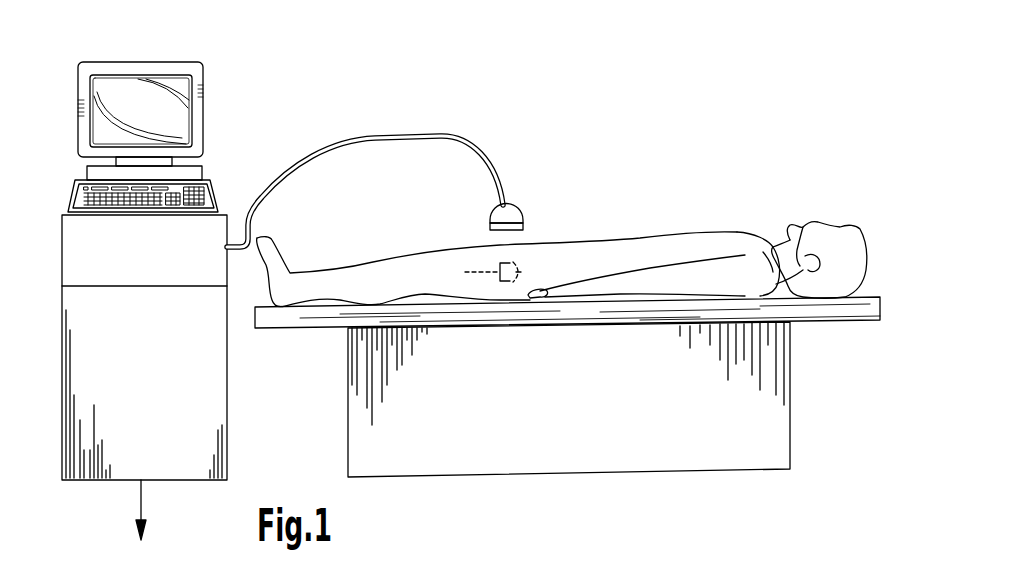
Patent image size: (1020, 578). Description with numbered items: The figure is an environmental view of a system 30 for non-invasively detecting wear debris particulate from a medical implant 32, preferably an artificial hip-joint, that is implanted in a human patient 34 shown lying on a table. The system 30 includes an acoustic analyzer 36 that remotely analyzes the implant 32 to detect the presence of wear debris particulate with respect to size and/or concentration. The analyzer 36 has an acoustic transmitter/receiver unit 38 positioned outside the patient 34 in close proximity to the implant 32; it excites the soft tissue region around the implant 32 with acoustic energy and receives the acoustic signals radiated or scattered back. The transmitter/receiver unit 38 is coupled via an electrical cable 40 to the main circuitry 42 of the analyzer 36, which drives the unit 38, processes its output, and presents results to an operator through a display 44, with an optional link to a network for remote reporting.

The system 30 is at (281, 78).
The medical implant 32 is at (488, 265).
The patient 34 is at (865, 212).
The acoustic analyzer 36 is at (482, 112).
The acoustic transmitter/receiver unit 38 is at (514, 206).
The electrical cable 40 is at (393, 136).
The main circuitry 42 is at (62, 250).
The display 44 is at (147, 61).